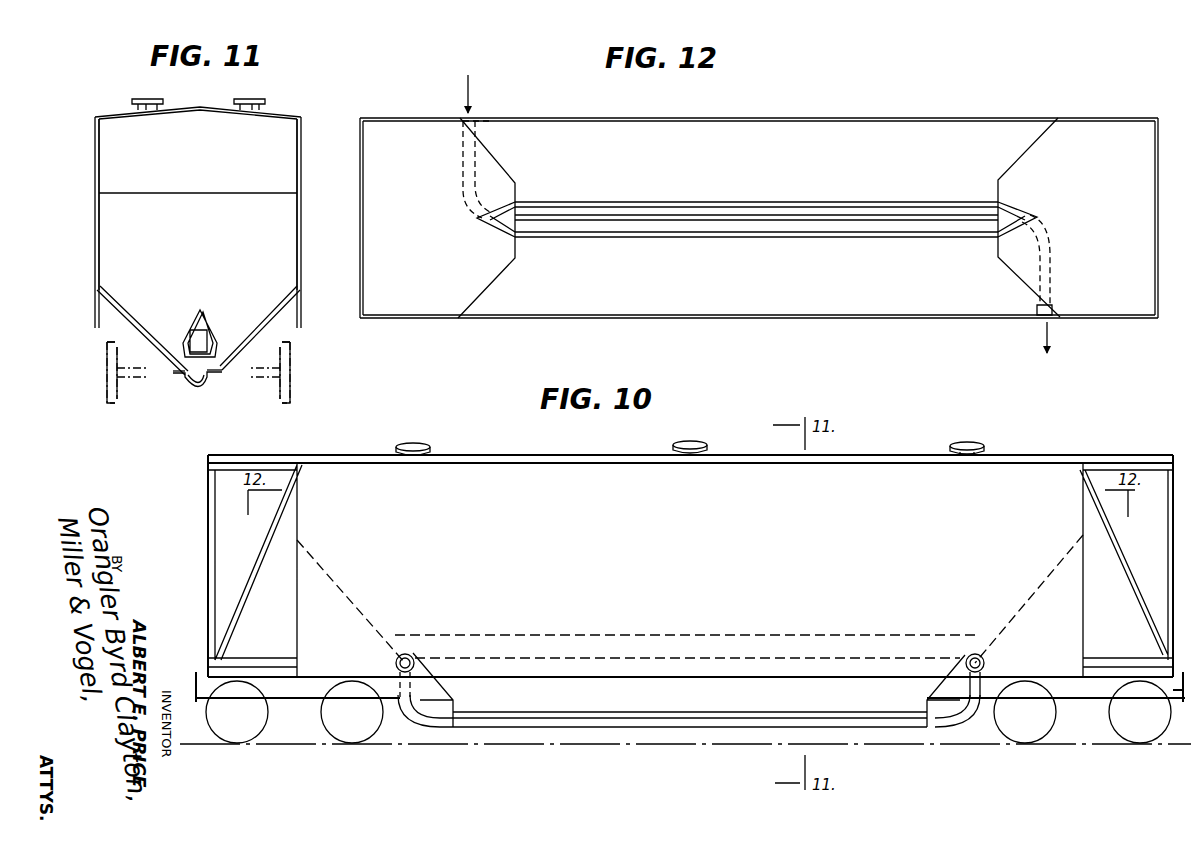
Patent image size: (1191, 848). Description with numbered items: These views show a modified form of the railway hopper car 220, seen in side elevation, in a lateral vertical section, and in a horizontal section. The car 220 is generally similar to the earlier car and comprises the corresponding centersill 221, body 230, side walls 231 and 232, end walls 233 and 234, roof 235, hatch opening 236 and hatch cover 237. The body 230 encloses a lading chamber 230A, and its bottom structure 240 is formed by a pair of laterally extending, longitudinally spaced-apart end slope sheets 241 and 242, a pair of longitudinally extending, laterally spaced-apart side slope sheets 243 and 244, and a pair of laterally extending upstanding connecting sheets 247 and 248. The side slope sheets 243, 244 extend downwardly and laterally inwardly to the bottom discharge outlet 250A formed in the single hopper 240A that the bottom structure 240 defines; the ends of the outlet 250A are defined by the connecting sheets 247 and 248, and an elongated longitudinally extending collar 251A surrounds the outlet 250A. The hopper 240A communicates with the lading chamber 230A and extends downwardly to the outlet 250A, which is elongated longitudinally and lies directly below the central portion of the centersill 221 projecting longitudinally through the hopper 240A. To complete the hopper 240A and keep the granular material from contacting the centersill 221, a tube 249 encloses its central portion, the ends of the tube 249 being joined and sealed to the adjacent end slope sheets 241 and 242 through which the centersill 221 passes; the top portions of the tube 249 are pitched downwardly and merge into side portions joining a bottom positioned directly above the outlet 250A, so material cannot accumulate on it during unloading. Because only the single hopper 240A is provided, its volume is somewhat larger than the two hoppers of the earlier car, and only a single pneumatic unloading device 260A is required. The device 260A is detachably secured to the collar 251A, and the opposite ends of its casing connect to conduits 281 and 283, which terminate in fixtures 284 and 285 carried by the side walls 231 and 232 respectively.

In FIG. 11, the railway hopper car 220 is at (187, 200).
In FIG. 10, the railway hopper car 220 is at (690, 542).
In FIG. 11, the centersill 221 is at (205, 321).
In FIG. 10, the centersill 221 is at (310, 682).
In FIG. 12, the body 230 is at (759, 214).
In FIG. 10, the body 230 is at (690, 542).
In FIG. 11, the lading chamber 230A is at (137, 165).
In FIG. 11, the side wall 231 is at (297, 226).
In FIG. 12, the side wall 231 is at (722, 320).
In FIG. 10, the side wall 231 is at (690, 566).
In FIG. 11, the side wall 232 is at (99, 240).
In FIG. 12, the side wall 232 is at (640, 118).
In FIG. 11, the end wall 233 is at (300, 158).
In FIG. 12, the end wall 233 is at (364, 210).
In FIG. 10, the end wall 233 is at (297, 530).
In FIG. 12, the end wall 234 is at (1155, 218).
In FIG. 10, the end wall 234 is at (1083, 530).
In FIG. 11, the roof 235 is at (215, 111).
In FIG. 10, the roof 235 is at (612, 455).
In FIG. 11, the hatch opening 236 is at (145, 112).
In FIG. 10, the hatch opening 236 is at (966, 465).
In FIG. 11, the hatch cover 237 is at (142, 99).
In FIG. 10, the hatch cover 237 is at (975, 444).
In FIG. 11, the bottom structure 240 is at (170, 316).
In FIG. 12, the bottom structure 240 is at (508, 298).
In FIG. 10, the bottom structure 240 is at (690, 599).
In FIG. 11, the hopper 240A is at (192, 248).
In FIG. 11, the end slope sheet 241 is at (172, 210).
In FIG. 12, the end slope sheet 241 is at (422, 264).
In FIG. 10, the end slope sheet 241 is at (340, 588).
In FIG. 12, the end slope sheet 242 is at (1092, 248).
In FIG. 10, the end slope sheet 242 is at (1030, 588).
In FIG. 11, the side slope sheet 243 is at (120, 310).
In FIG. 12, the side slope sheet 243 is at (817, 274).
In FIG. 11, the side slope sheet 244 is at (280, 302).
In FIG. 12, the side slope sheet 244 is at (842, 154).
In FIG. 12, the connecting sheet 247 is at (518, 194).
In FIG. 10, the connecting sheet 247 is at (455, 700).
In FIG. 12, the connecting sheet 248 is at (998, 192).
In FIG. 10, the connecting sheet 248 is at (925, 700).
In FIG. 11, the tube 249 is at (200, 310).
In FIG. 12, the tube 249 is at (602, 215).
In FIG. 10, the tube 249 is at (668, 636).
In FIG. 11, the bottom discharge outlet 250A is at (188, 378).
In FIG. 11, the collar 251A is at (222, 372).
In FIG. 11, the pneumatic unloading device 260A is at (190, 394).
In FIG. 10, the pneumatic unloading device 260A is at (568, 730).
In FIG. 12, the conduit 281 is at (1053, 282).
In FIG. 12, the conduit 283 is at (462, 165).
In FIG. 12, the fixture 284 is at (1036, 310).
In FIG. 12, the fixture 285 is at (482, 126).